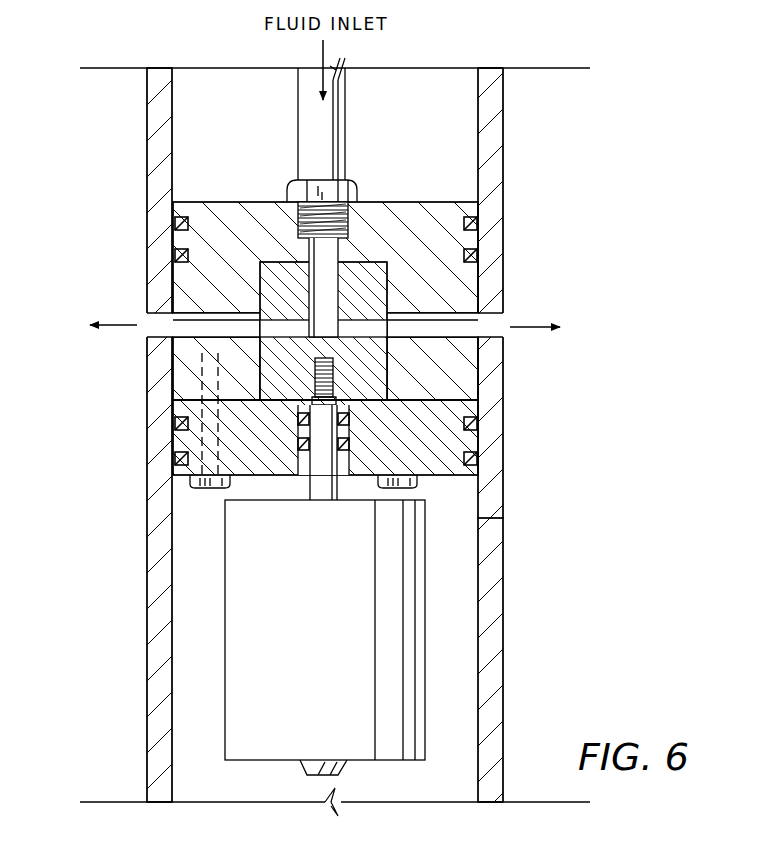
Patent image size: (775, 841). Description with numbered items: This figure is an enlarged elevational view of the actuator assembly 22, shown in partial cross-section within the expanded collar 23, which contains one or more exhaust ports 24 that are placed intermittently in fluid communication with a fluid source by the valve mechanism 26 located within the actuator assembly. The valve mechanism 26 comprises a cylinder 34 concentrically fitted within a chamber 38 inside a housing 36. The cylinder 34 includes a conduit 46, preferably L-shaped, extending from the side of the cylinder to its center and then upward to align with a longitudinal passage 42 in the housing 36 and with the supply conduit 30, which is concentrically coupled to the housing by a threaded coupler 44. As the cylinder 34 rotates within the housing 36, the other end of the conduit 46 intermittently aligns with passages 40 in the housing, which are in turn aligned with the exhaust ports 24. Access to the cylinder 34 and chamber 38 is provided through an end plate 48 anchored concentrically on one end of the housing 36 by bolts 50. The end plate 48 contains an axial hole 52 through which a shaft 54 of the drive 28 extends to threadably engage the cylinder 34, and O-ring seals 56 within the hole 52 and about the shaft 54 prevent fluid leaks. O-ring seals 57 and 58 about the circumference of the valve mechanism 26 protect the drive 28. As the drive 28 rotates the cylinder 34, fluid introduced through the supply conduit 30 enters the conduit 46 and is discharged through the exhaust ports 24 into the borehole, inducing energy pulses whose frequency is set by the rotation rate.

The actuator assembly 22 is at (525, 240).
The expanded collar 23 is at (505, 518).
The exhaust ports 24 is at (152, 333).
The valve mechanism 26 is at (470, 500).
The drive 28 is at (440, 645).
The supply conduit 30 is at (348, 130).
The cylinder 34 is at (358, 275).
The housing 36 is at (440, 202).
The chamber 38 is at (387, 280).
The passages 40 is at (215, 318).
The longitudinal passage 42 is at (305, 258).
The threaded coupler 44 is at (288, 192).
The conduit 46 is at (335, 352).
The end plate 48 is at (417, 452).
The bolts 50 is at (196, 490).
The axial hole 52 is at (312, 462).
The shaft 54 is at (300, 405).
The O-ring seals 56 is at (345, 430).
The O-ring seal 57 is at (175, 252).
The O-ring seal 58 is at (175, 455).